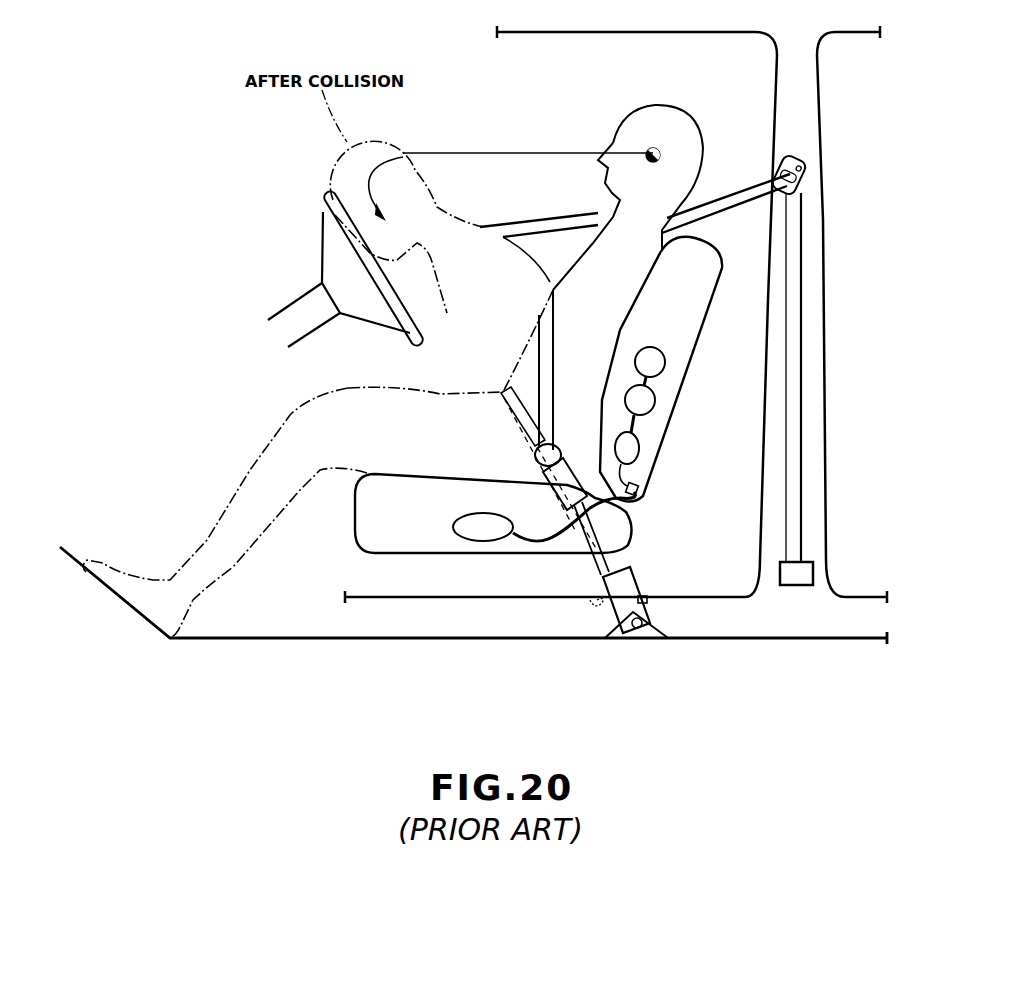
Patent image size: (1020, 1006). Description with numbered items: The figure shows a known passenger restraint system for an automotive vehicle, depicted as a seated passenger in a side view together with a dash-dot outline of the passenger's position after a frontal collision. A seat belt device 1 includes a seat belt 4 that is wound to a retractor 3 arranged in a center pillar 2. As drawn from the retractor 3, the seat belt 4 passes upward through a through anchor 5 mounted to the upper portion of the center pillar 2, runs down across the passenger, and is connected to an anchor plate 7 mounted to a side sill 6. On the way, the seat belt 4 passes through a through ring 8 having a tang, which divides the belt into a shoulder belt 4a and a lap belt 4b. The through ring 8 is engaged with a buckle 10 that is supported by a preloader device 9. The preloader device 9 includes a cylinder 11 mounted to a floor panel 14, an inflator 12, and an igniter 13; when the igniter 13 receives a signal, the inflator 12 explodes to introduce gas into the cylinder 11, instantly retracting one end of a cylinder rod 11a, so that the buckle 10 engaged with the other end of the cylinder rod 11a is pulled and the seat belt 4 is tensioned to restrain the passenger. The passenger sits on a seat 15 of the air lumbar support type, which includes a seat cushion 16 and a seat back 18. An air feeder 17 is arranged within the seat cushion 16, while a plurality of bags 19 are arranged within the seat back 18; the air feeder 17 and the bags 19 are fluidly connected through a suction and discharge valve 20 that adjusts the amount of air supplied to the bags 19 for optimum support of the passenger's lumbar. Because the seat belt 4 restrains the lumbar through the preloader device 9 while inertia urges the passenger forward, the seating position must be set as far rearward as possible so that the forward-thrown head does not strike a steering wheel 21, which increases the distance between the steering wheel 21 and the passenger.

The seat belt device 1 is at (553, 205).
The center pillar 2 is at (817, 337).
The retractor 3 is at (805, 573).
The seat belt 4 is at (517, 223).
The shoulder belt 4a is at (725, 197).
The lap belt 4b is at (507, 383).
The through anchor 5 is at (803, 163).
The side sill 6 is at (418, 620).
The anchor plate 7 is at (597, 603).
The through ring 8 is at (533, 453).
The preloader device 9 is at (624, 544).
The buckle 10 is at (568, 463).
The cylinder 11 is at (633, 628).
The cylinder rod 11a is at (590, 540).
The inflator 12 is at (640, 583).
The igniter 13 is at (647, 603).
The floor panel 14 is at (620, 633).
The seat 15 is at (580, 396).
The seat cushion 16 is at (370, 528).
The air feeder 17 is at (457, 520).
The seat back 18 is at (717, 297).
The bags 19 is at (650, 397).
The suction and discharge valve 20 is at (640, 488).
The steering wheel 21 is at (327, 200).